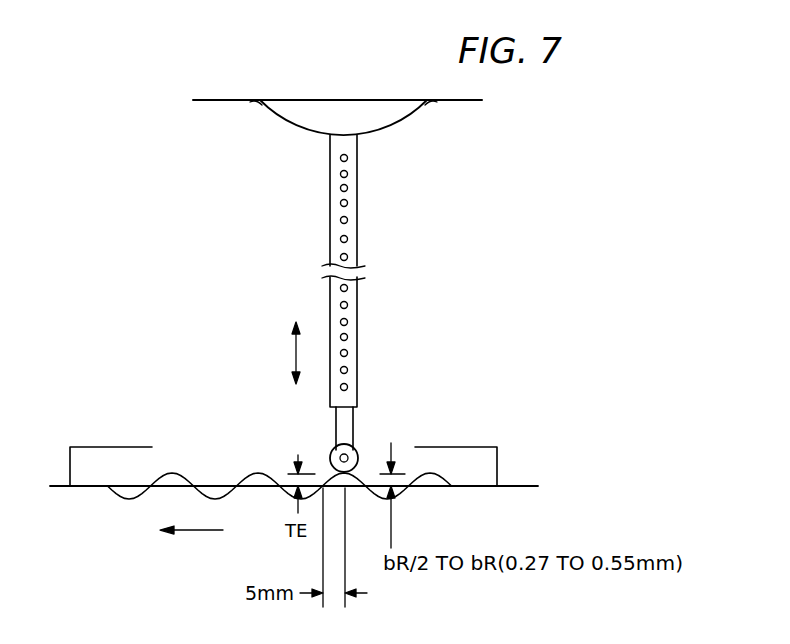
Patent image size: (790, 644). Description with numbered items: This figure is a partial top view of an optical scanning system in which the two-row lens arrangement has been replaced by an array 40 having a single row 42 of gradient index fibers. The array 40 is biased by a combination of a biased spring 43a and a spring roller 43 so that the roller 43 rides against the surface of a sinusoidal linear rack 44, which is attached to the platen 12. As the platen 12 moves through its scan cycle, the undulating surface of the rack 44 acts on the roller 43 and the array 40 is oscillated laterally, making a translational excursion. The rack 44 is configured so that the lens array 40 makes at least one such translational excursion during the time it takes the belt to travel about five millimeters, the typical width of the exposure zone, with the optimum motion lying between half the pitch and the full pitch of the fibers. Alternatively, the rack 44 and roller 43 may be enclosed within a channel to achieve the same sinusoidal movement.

The platen 12 is at (487, 447).
The array 40 is at (330, 296).
The single row 42 is at (349, 352).
The spring roller 43 is at (340, 427).
The biased spring 43a is at (390, 128).
The sinusoidal linear rack 44 is at (413, 497).